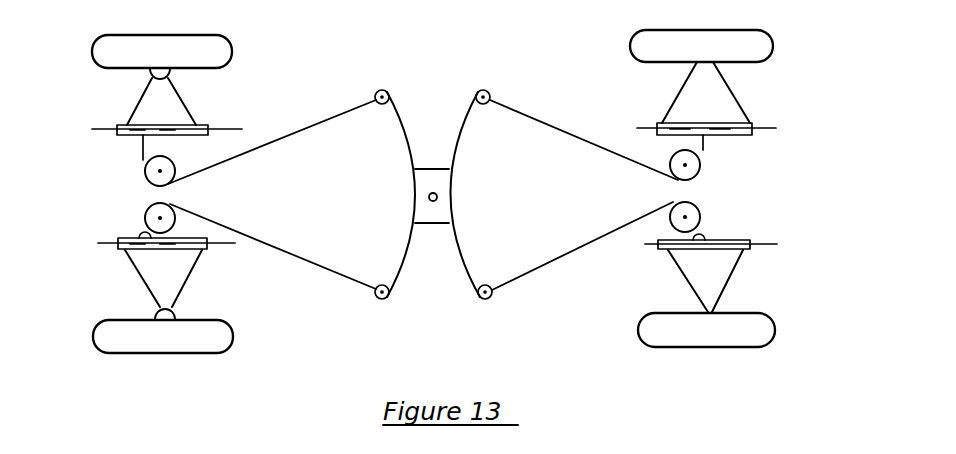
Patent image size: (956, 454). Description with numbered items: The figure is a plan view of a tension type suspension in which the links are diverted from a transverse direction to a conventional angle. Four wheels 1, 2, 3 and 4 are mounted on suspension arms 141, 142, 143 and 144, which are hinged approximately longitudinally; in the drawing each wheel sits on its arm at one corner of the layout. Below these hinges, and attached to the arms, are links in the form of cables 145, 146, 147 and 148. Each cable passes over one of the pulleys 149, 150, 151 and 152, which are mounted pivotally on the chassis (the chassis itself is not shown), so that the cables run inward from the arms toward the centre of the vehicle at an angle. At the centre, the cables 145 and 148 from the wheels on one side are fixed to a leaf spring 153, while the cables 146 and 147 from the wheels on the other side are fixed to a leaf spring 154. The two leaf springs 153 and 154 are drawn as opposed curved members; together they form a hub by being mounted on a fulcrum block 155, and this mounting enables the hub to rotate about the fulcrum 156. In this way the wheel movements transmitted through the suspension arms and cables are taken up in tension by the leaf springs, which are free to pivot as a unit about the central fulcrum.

The wheel 1 is at (105, 331).
The wheel 2 is at (93, 58).
The wheel 3 is at (753, 37).
The wheel 4 is at (763, 333).
The suspension arm 141 is at (173, 101).
The suspension arm 142 is at (685, 90).
The suspension arm 143 is at (678, 270).
The suspension arm 144 is at (183, 276).
The cable 145 is at (308, 128).
The cable 146 is at (553, 125).
The cable 147 is at (533, 270).
The cable 148 is at (350, 279).
The pulley 149 is at (148, 163).
The pulley 150 is at (700, 165).
The pulley 151 is at (702, 212).
The pulley 152 is at (147, 213).
The leaf spring 153 is at (412, 148).
The leaf spring 154 is at (457, 252).
The fulcrum block 155 is at (440, 180).
The fulcrum 156 is at (438, 196).